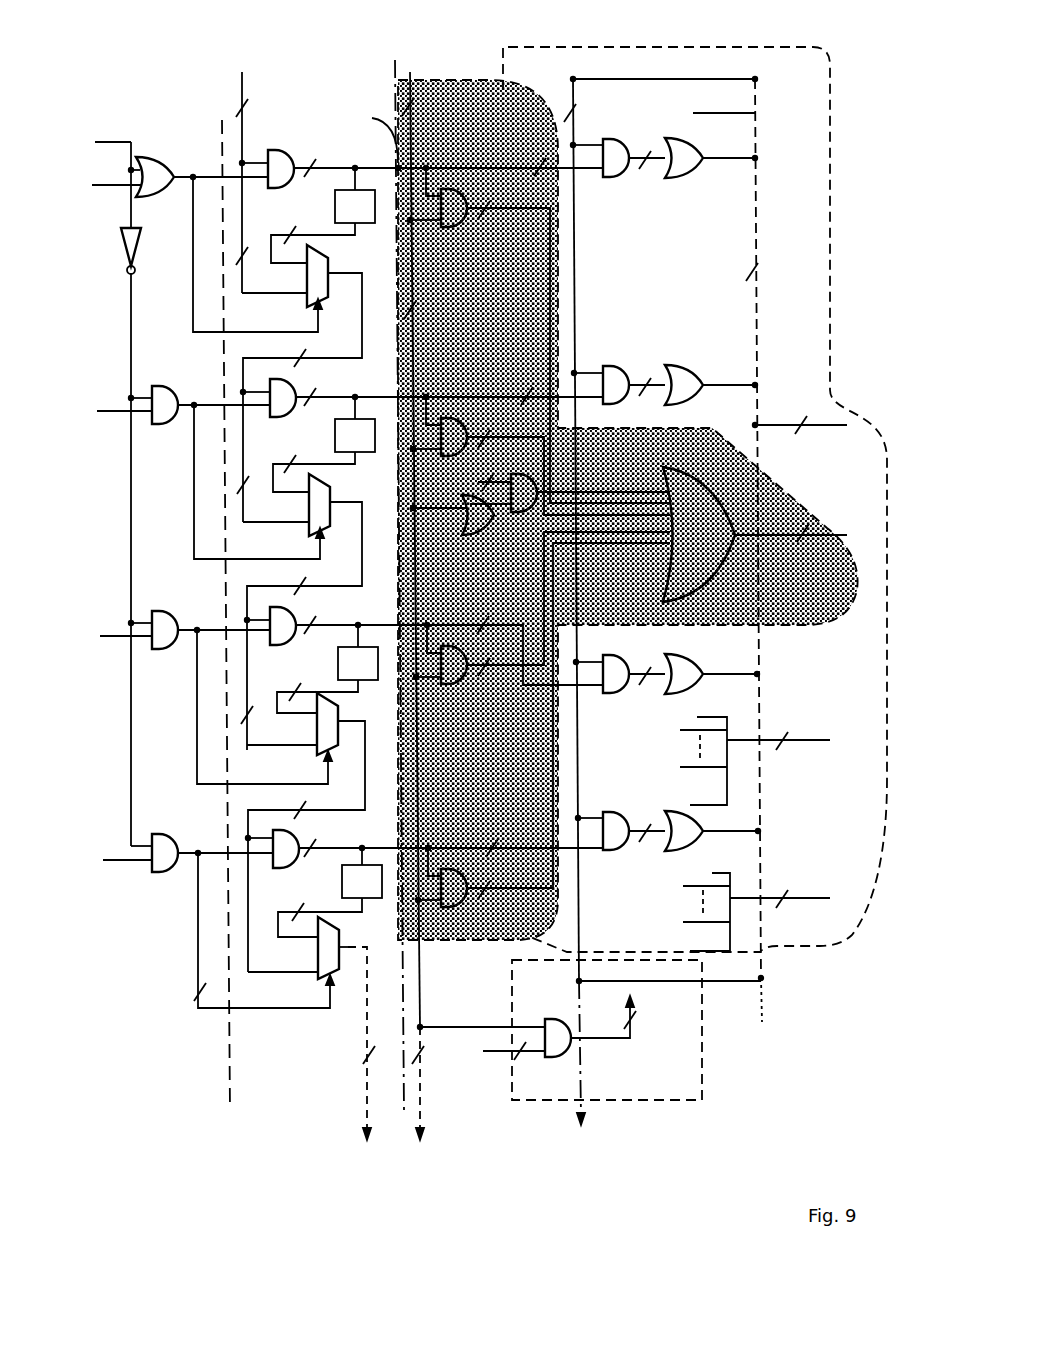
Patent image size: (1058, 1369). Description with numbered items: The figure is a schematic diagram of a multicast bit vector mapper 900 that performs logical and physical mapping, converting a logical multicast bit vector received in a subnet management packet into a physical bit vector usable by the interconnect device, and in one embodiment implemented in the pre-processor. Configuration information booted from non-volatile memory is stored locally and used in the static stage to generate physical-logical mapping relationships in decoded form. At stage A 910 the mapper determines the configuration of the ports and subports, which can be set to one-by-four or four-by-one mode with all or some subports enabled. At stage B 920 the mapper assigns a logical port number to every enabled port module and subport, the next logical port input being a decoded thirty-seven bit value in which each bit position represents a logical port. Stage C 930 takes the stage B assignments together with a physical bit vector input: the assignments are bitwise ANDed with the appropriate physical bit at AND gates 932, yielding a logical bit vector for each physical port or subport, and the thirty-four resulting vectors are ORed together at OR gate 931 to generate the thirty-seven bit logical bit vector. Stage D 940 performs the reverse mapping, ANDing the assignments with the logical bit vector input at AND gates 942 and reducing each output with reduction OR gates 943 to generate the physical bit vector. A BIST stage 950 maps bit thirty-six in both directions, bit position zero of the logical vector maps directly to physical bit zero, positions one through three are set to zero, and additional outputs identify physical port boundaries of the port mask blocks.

The multicast bit vector mapper 900 is at (463, 607).
The stage A 910 is at (140, 1077).
The stage B 920 is at (315, 1077).
The stage C 930 is at (621, 547).
The OR gate 931 is at (712, 549).
The AND gates 932 is at (538, 553).
The stage D 940 is at (695, 534).
The AND gates 942 is at (634, 494).
The reduction OR gates 943 is at (711, 494).
The BIST stage 950 is at (560, 1009).